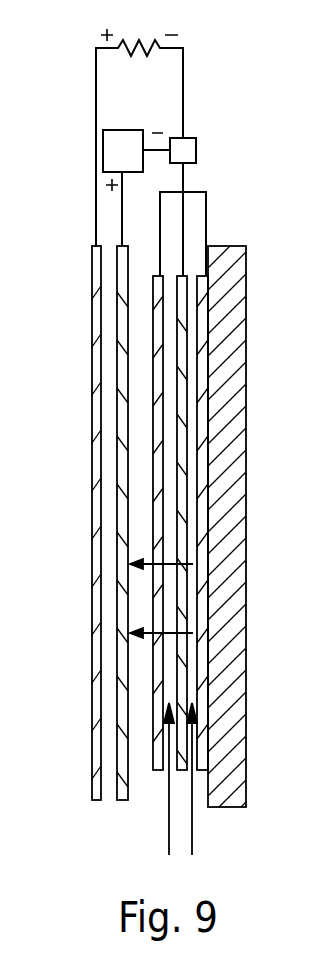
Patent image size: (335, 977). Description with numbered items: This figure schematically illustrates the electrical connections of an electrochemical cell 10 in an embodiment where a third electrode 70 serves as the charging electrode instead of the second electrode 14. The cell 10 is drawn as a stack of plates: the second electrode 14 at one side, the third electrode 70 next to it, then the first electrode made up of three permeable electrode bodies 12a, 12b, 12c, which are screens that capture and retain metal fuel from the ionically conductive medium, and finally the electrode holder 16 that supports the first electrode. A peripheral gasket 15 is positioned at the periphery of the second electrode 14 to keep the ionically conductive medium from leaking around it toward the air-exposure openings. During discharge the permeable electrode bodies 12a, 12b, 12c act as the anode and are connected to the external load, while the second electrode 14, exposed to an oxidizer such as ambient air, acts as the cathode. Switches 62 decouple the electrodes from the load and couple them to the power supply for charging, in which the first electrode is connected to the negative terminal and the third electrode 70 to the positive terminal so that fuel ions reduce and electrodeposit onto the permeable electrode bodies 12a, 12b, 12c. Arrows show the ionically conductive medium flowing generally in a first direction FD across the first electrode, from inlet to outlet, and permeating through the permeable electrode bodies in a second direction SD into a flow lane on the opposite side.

The electrochemical cell 10 is at (65, 85).
The second electrode 14 is at (97, 300).
The third electrode 70 is at (121, 333).
The peripheral gasket 15 is at (139, 383).
The permeable electrode body 12a is at (205, 325).
The permeable electrode body 12b is at (182, 419).
The permeable electrode body 12c is at (160, 497).
The electrode holder 16 is at (230, 378).
The switch 62 is at (196, 150).
The second direction SD is at (168, 628).
The first direction FD is at (227, 853).